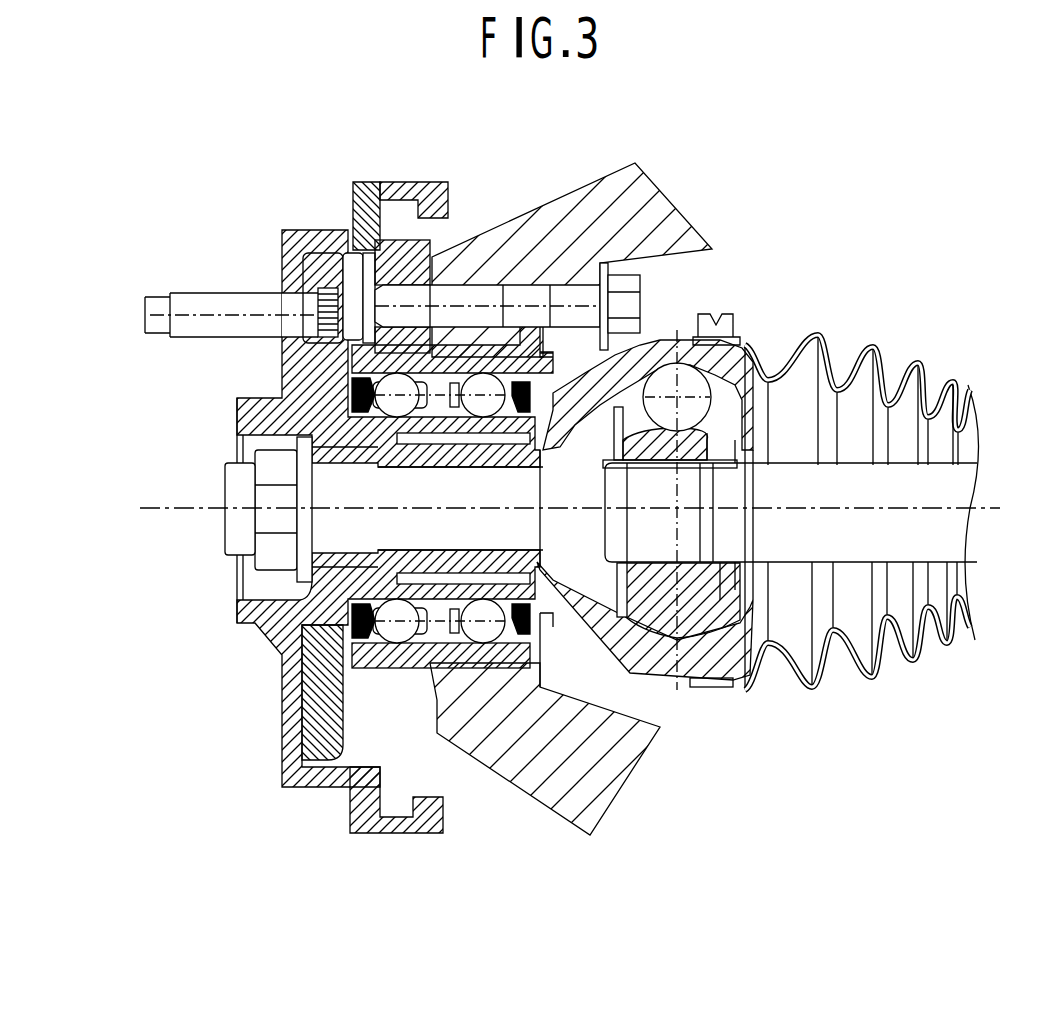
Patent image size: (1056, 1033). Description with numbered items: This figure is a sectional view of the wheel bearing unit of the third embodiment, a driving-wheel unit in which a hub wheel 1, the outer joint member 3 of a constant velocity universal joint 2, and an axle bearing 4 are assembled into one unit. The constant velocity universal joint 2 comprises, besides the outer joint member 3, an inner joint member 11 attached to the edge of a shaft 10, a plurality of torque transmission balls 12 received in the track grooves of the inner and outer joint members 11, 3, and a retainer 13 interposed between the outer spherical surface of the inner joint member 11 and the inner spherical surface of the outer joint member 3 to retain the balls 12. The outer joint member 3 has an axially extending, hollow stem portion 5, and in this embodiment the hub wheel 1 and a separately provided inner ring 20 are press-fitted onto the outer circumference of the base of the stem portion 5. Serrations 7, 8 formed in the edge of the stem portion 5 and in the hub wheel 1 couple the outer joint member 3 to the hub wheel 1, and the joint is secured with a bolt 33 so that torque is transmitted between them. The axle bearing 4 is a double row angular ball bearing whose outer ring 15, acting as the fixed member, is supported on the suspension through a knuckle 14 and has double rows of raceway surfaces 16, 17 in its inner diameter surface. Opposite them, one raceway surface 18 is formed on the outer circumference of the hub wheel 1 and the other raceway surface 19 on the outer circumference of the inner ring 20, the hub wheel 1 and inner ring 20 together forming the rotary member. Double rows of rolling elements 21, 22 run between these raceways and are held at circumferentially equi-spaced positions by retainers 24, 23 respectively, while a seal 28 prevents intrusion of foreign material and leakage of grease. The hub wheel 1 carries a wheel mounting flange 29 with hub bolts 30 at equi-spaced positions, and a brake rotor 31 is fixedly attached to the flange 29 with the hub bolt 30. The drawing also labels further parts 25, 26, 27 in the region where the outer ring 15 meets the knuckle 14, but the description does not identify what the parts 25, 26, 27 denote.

The hub wheel 1 is at (243, 633).
The constant velocity universal joint 2 is at (962, 630).
The outer joint member 3 is at (707, 675).
The axle bearing 4 is at (375, 672).
The stem portion 5 is at (292, 624).
The serrations 7 is at (300, 485).
The serrations 8 is at (300, 690).
The shaft 10 is at (930, 480).
The inner joint member 11 is at (733, 600).
The torque transmission balls 12 is at (690, 387).
The retainer 13 is at (735, 410).
The knuckle 14 is at (548, 352).
The outer ring 15 is at (409, 677).
The raceway surface 16 is at (305, 730).
The raceway surface 17 is at (466, 665).
The raceway surface 18 is at (248, 413).
The raceway surface 19 is at (483, 415).
The inner ring 20 is at (455, 425).
The rolling elements 21 is at (377, 387).
The rolling elements 22 is at (487, 635).
The retainer 23 is at (405, 617).
The retainer 24 is at (478, 392).
The nut 25 is at (425, 262).
The sleeve 26 is at (352, 295).
The bolt head 27 is at (622, 285).
The seal 28 is at (246, 388).
The wheel mounting flange 29 is at (288, 285).
The hub bolt 30 is at (213, 315).
The brake rotor 31 is at (364, 187).
The bolt 33 is at (267, 520).